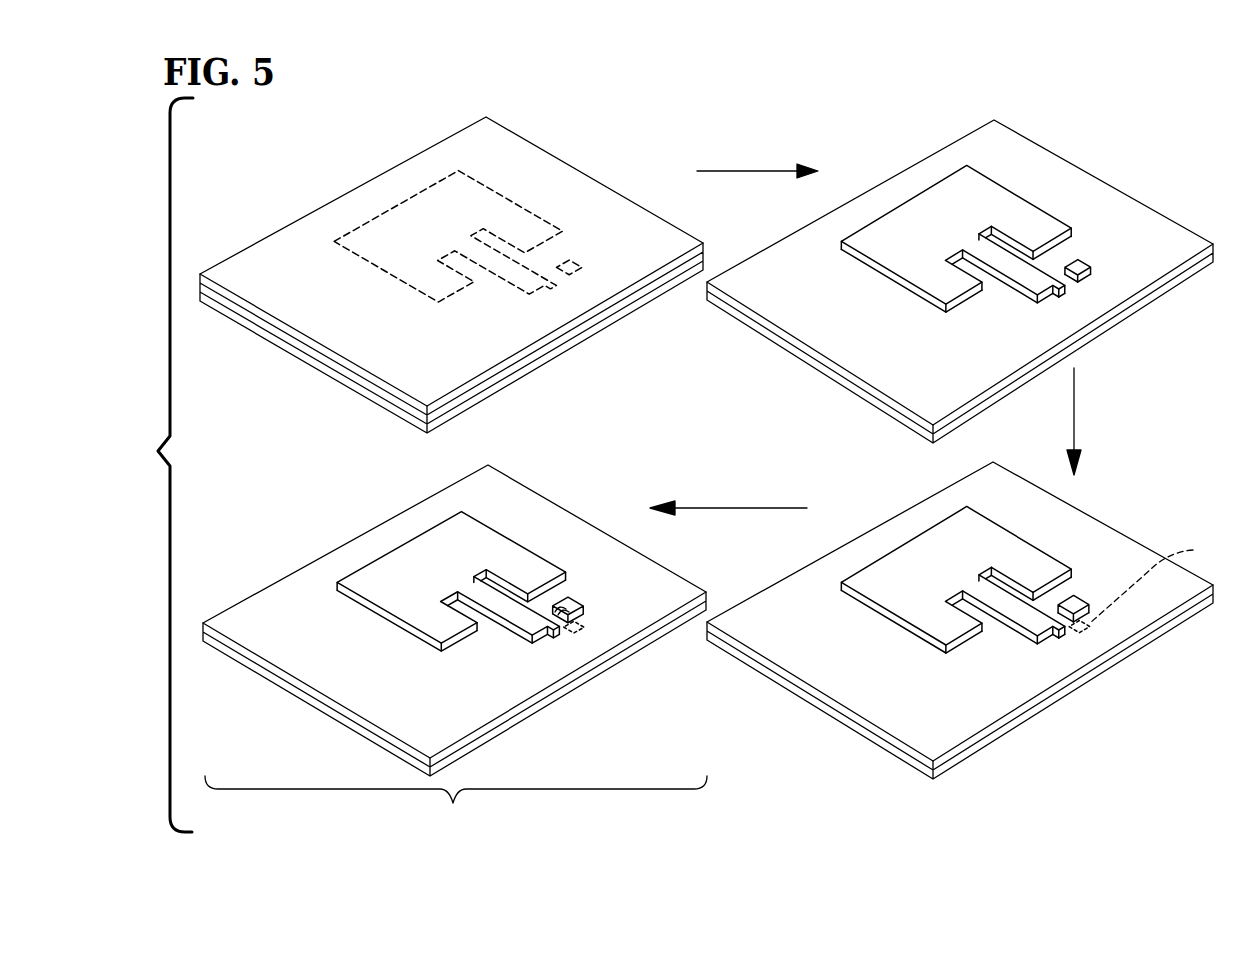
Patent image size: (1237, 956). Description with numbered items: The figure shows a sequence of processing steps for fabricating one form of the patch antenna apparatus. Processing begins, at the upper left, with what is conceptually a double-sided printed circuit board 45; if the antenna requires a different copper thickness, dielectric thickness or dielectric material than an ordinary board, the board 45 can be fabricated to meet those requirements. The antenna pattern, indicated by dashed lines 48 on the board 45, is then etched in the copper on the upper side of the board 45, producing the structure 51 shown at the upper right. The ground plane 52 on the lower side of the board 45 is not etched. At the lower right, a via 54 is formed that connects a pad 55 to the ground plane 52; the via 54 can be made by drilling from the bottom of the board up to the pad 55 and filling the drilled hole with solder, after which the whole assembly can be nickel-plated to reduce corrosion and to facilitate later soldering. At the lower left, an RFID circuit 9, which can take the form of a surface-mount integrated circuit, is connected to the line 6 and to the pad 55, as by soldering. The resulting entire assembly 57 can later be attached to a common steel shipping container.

The double-sided printed circuit board 45 is at (595, 177).
The dashed lines 48 is at (518, 177).
The structure 51 is at (1018, 172).
The ground plane 52 is at (1117, 313).
The pad 55 is at (1085, 603).
The via 54 is at (891, 586).
The RFID circuit 9 is at (560, 610).
The line 6 is at (522, 632).
The entire assembly 57 is at (456, 804).